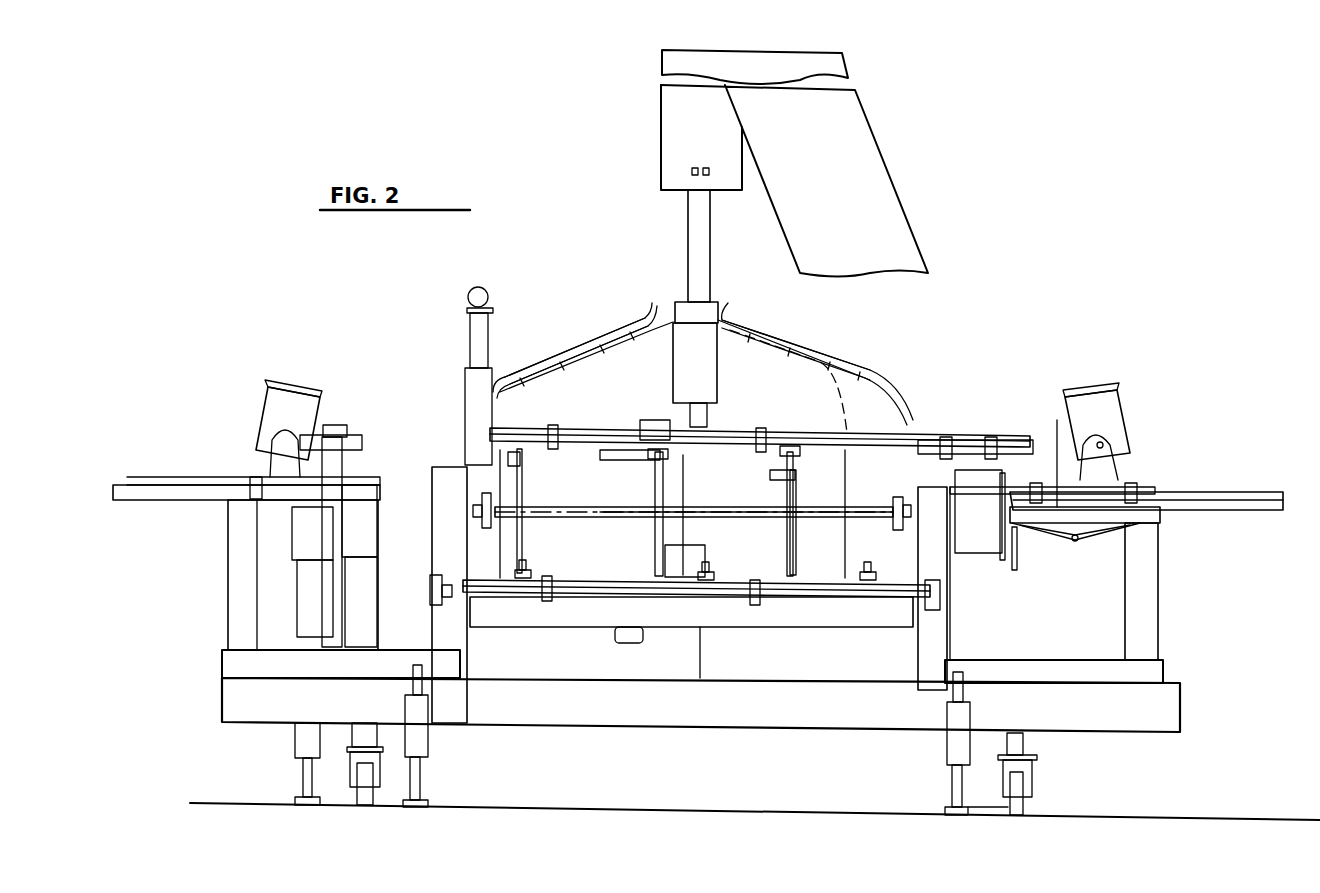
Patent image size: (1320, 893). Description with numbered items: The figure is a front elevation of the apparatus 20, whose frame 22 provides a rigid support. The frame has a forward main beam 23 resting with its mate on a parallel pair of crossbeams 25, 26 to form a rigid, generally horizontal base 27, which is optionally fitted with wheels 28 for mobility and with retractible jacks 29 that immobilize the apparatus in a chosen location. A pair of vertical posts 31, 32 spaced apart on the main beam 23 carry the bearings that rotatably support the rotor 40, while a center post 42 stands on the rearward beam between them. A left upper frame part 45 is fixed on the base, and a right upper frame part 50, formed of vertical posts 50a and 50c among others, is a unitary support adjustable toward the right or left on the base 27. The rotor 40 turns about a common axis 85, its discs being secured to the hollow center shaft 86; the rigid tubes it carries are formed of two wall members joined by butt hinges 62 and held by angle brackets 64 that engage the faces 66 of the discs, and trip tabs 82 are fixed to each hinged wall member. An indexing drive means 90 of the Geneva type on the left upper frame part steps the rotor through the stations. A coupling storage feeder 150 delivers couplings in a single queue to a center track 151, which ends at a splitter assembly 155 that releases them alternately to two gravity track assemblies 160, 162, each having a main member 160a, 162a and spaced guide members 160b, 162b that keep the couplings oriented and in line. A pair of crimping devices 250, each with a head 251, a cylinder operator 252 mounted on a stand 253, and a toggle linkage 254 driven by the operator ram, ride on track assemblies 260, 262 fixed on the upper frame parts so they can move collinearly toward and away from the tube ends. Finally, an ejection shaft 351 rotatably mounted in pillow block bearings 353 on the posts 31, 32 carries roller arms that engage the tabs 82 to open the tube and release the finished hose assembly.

The apparatus 20 is at (395, 345).
The frame 22 is at (622, 737).
The main beam 23 is at (772, 715).
The crossbeam 25 is at (365, 722).
The crossbeam 26 is at (1025, 742).
The base 27 is at (1190, 705).
The wheels 28 is at (365, 795).
The retractible jacks 29 is at (300, 740).
The vertical post 31 is at (465, 685).
The vertical post 32 is at (940, 640).
The rotor 40 is at (815, 497).
The center post 42 is at (685, 658).
The left upper frame part 45 is at (226, 567).
The right upper frame part 50 is at (1160, 553).
The vertical post 50a is at (1150, 620).
The vertical post 50c is at (935, 475).
The butt hinges 62 is at (523, 570).
The angle brackets 64 is at (612, 462).
The faces 66 is at (788, 484).
The trip tabs 82 is at (546, 600).
The common axis 85 is at (598, 508).
The hollow center shaft 86 is at (852, 527).
The indexing drive means 90 is at (355, 520).
The coupling storage feeder 150 is at (880, 185).
The center track 151 is at (690, 235).
The splitter assembly 155 is at (695, 318).
The gravity track assembly 160 is at (577, 333).
The main member 160a is at (577, 335).
The guide members 160b is at (560, 362).
The gravity track assembly 162 is at (825, 345).
The main member 162a is at (793, 335).
The guide members 162b is at (808, 355).
The crimping device 250 is at (283, 385).
The head 251 is at (980, 543).
The clamp cylinder 252 is at (278, 416).
The stand 253 is at (280, 462).
The toggle linkage 254 is at (1065, 547).
The track assembly 260 is at (178, 480).
The track assembly 262 is at (1225, 490).
The shaft 351 is at (635, 600).
The pillow block bearings 353 is at (440, 600).